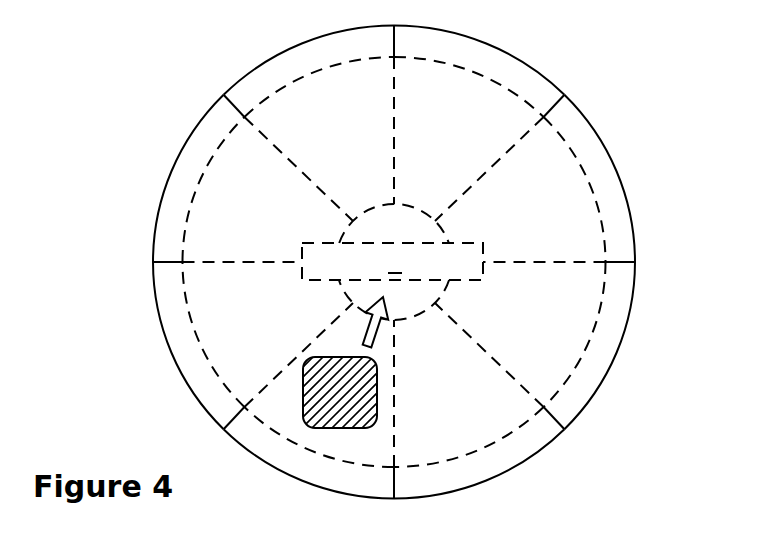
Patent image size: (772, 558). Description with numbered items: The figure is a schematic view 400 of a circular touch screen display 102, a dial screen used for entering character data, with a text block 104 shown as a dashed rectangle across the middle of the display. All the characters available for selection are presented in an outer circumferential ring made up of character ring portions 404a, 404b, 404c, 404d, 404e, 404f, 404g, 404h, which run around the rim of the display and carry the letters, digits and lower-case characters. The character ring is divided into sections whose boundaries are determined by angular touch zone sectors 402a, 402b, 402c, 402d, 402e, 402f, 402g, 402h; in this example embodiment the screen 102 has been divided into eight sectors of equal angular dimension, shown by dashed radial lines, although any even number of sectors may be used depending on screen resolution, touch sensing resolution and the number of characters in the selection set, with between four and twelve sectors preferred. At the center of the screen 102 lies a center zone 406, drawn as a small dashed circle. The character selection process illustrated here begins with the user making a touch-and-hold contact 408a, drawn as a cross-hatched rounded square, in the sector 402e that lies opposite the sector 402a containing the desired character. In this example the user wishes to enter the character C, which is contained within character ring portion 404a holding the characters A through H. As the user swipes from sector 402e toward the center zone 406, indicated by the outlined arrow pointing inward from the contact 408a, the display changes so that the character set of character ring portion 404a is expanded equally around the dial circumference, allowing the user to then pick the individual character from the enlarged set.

The schematic view 400 is at (128, 90).
The circular touch screen display 102 is at (605, 121).
The text block 104 is at (484, 279).
The touch zone sector 402a is at (421, 128).
The touch zone sector 402b is at (506, 219).
The touch zone sector 402c is at (526, 301).
The touch zone sector 402d is at (430, 414).
The touch zone sector 402e is at (368, 443).
The touch zone sector 402f is at (226, 314).
The touch zone sector 402g is at (224, 223).
The touch zone sector 402h is at (305, 128).
The character ring portion 404a is at (512, 59).
The character ring portion 404b is at (617, 189).
The character ring portion 404c is at (625, 315).
The character ring portion 404d is at (520, 460).
The character ring portion 404e is at (305, 483).
The character ring portion 404f is at (175, 360).
The character ring portion 404g is at (180, 159).
The character ring portion 404h is at (268, 62).
The center zone 406 is at (376, 239).
The contact 408a is at (314, 404).